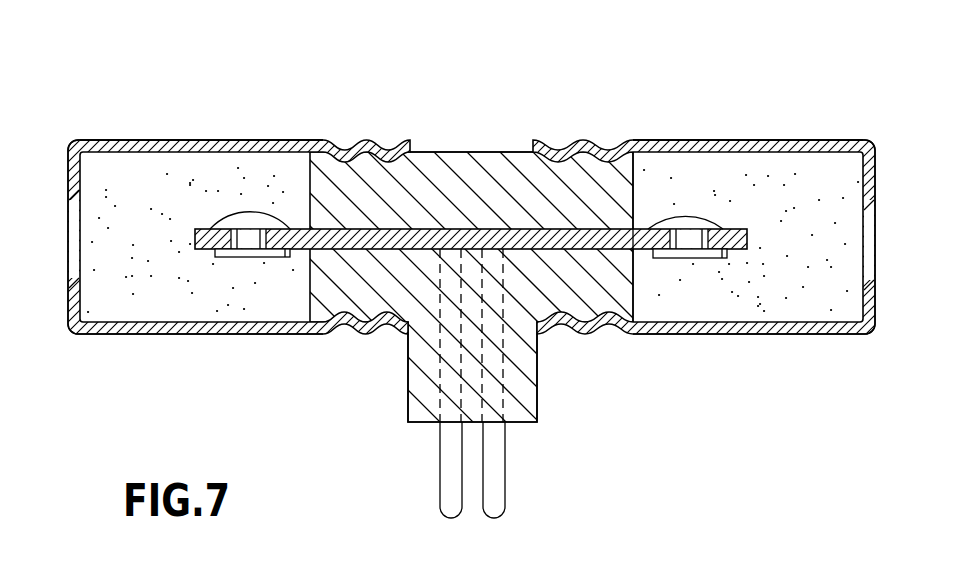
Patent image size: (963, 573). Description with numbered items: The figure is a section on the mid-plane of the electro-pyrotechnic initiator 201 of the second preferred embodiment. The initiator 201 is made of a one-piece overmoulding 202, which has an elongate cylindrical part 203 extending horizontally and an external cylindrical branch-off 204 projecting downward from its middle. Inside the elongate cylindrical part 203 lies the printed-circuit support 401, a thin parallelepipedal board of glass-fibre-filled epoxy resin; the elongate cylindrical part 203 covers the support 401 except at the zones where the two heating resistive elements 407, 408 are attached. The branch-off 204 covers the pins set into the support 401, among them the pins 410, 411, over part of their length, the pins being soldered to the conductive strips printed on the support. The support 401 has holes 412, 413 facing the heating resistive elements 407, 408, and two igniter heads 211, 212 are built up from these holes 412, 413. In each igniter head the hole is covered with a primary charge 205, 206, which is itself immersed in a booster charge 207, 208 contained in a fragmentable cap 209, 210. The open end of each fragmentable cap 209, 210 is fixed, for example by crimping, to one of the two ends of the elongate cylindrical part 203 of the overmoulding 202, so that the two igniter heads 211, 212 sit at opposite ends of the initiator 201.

The electro-pyrotechnic initiator 201 is at (240, 128).
The one-piece overmoulding 202 is at (509, 140).
The elongate cylindrical part 203 is at (445, 192).
The external cylindrical branch-off 204 is at (520, 387).
The primary charge 205 is at (707, 223).
The primary charge 206 is at (265, 217).
The booster charge 207 is at (818, 305).
The booster charge 208 is at (114, 305).
The fragmentable cap 209 is at (650, 153).
The fragmentable cap 210 is at (160, 138).
The igniter head 211 is at (878, 163).
The igniter head 212 is at (64, 172).
The printed-circuit support 401 is at (605, 240).
The heating resistive element 407 is at (702, 258).
The heating resistive element 408 is at (235, 257).
The pin 410 is at (448, 475).
The pin 411 is at (495, 493).
The hole 412 is at (683, 230).
The hole 413 is at (262, 240).